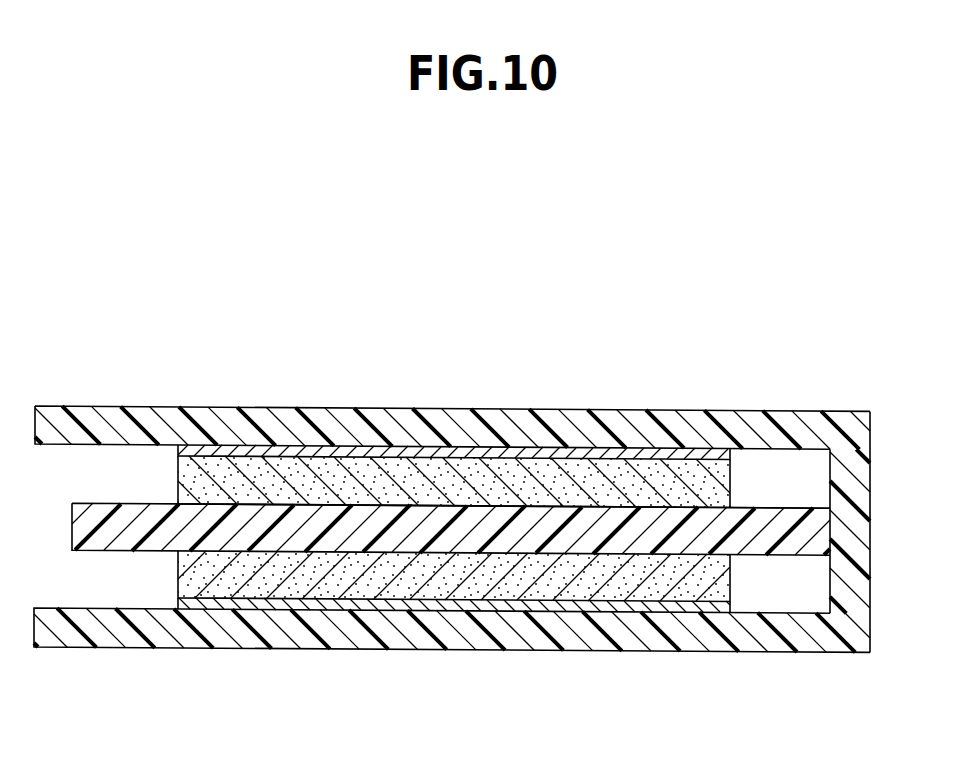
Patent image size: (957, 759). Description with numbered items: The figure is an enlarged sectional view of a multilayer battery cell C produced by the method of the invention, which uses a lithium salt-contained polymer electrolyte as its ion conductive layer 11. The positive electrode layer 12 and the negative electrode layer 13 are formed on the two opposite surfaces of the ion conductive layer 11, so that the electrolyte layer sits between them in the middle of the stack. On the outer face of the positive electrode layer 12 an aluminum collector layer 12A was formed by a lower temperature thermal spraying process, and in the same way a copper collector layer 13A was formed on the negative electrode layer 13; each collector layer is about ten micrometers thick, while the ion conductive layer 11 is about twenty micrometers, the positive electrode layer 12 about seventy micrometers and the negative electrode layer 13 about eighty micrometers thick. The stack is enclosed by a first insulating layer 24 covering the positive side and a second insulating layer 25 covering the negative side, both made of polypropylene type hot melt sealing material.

The multilayer battery cell C is at (452, 528).
The first insulating layer 24 is at (643, 409).
The second insulating layer 25 is at (575, 650).
The aluminum collector layer 12A is at (718, 447).
The positive electrode layer 12 is at (730, 483).
The ion conductive layer 11 is at (817, 534).
The negative electrode layer 13 is at (730, 578).
The copper collector layer 13A is at (695, 613).